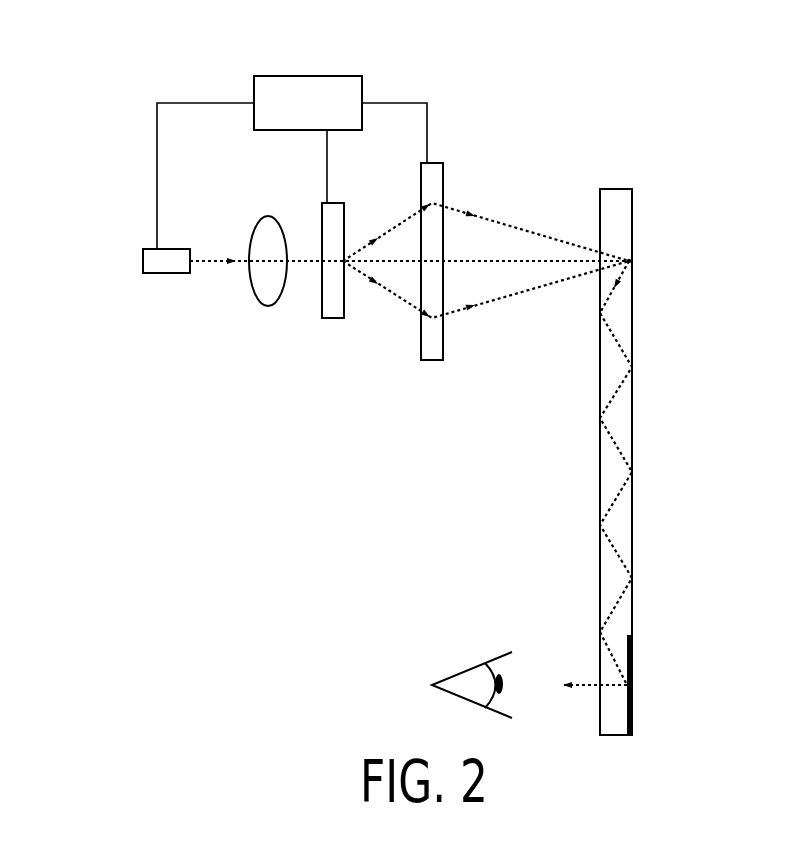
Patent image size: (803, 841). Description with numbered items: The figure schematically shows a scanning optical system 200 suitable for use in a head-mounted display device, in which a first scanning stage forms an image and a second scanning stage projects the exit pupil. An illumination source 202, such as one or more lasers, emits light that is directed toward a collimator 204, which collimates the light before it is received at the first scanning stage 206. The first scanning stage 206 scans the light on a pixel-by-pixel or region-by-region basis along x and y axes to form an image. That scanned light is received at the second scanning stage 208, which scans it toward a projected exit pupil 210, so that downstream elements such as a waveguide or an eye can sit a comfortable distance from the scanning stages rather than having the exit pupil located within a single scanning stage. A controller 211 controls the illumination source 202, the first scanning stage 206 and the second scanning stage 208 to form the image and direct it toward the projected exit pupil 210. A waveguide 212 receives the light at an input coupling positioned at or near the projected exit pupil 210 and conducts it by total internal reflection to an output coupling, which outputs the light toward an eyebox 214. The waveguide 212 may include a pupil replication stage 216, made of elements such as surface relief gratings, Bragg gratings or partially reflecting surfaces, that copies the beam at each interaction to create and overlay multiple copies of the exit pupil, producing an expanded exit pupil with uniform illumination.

The scanning optical system 200 is at (146, 41).
The illumination source 202 is at (168, 249).
The collimator 204 is at (268, 215).
The first scanning stage 206 is at (344, 203).
The second scanning stage 208 is at (432, 163).
The projected exit pupil 210 is at (633, 261).
The controller 211 is at (308, 76).
The waveguide 212 is at (633, 413).
The eyebox 214 is at (470, 668).
The pupil replication stage 216 is at (668, 684).